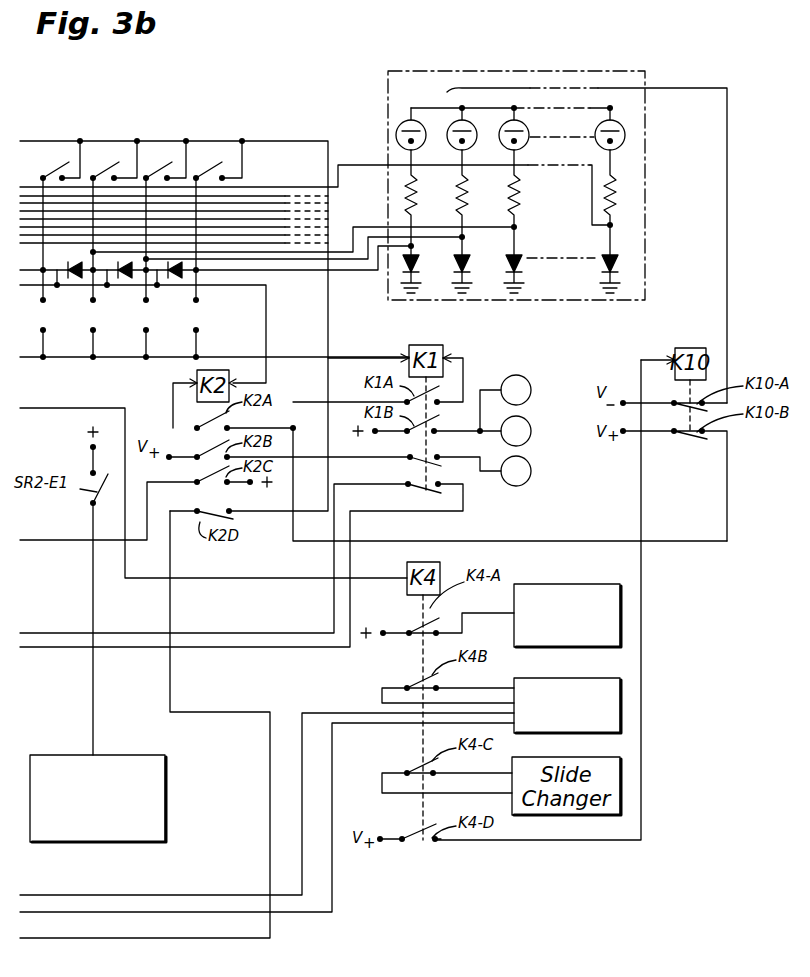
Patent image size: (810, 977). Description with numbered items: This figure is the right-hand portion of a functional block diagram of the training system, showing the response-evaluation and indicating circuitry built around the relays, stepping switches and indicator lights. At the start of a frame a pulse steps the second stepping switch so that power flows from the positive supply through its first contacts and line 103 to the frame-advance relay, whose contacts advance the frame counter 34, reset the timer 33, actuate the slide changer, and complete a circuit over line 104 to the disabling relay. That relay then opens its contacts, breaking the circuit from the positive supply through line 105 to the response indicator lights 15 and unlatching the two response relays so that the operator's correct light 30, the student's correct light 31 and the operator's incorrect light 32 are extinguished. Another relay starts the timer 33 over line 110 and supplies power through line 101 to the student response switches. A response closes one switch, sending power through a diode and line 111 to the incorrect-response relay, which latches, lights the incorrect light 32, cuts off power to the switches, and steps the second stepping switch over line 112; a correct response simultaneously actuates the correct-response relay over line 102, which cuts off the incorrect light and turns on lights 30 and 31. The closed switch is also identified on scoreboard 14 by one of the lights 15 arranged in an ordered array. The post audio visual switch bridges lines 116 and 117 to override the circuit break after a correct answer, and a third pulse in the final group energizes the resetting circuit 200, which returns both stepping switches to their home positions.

The scoreboard 14 is at (630, 72).
The response indicator lights 15 is at (500, 124).
The operator's correct light 30 is at (528, 438).
The student's correct light 31 is at (528, 383).
The operator's incorrect light 32 is at (528, 478).
The timer 33 is at (568, 678).
The frame counter 34 is at (613, 569).
The line 101 is at (150, 141).
The line 102 is at (338, 358).
The line 103 is at (125, 410).
The line 104 is at (641, 690).
The line 105 is at (729, 210).
The line 110 is at (249, 897).
The line 111 is at (266, 322).
The line 112 is at (147, 524).
The line 116 is at (100, 632).
The line 117 is at (117, 648).
The resetting circuit 200 is at (165, 772).